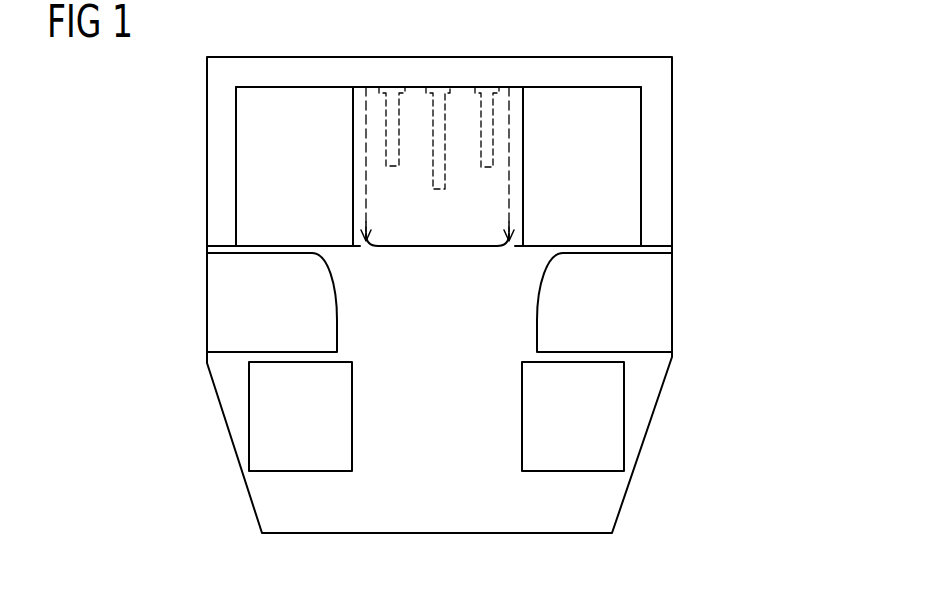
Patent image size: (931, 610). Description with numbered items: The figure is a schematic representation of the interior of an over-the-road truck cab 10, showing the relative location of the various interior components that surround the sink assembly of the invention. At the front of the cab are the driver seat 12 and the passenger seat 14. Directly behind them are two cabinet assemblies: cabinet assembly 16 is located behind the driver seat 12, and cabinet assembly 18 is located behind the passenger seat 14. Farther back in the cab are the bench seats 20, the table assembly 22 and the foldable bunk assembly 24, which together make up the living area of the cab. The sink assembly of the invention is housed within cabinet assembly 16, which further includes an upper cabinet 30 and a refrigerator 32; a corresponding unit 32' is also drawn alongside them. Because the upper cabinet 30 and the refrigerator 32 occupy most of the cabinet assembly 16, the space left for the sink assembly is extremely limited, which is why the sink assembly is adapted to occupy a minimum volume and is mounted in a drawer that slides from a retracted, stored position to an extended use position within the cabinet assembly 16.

The truck cab 10 is at (703, 199).
The driver seat 12 is at (613, 432).
The passenger seat 14 is at (262, 432).
The cabinet assembly 16 is at (229, 332).
The cabinet assembly 18 is at (500, 70).
The bench seats 20 is at (250, 143).
The table assembly 22 is at (363, 247).
The foldable bunk assembly 24 is at (444, 234).
The upper cabinet 30 is at (432, 137).
The refrigerator 32 is at (468, 85).
The left pin 32' is at (351, 92).